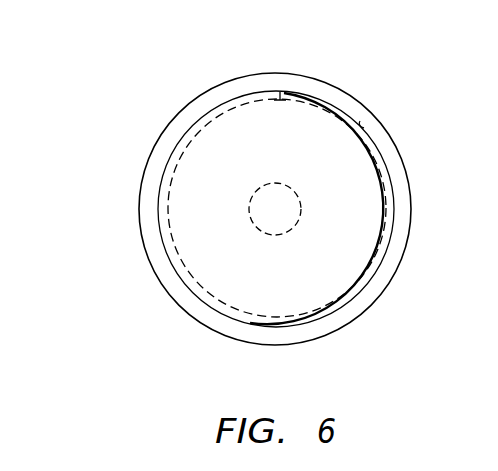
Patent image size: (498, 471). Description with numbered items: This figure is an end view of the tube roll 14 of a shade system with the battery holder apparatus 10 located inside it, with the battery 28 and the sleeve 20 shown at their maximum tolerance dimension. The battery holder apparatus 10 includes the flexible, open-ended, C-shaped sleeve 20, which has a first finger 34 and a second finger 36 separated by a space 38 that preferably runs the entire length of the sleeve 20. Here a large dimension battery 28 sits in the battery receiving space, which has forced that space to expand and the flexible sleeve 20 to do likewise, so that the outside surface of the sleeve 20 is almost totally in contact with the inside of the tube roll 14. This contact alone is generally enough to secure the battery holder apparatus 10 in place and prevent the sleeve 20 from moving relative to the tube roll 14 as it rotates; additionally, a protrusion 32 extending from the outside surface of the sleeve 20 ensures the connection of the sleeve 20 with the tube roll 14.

The battery holder apparatus 10 is at (155, 76).
The tube roll 14 is at (352, 105).
The sleeve 20 is at (153, 205).
The battery 28 is at (352, 258).
The protrusion 32 is at (393, 207).
The first finger 34 is at (279, 93).
The second finger 36 is at (362, 124).
The space 38 is at (296, 112).